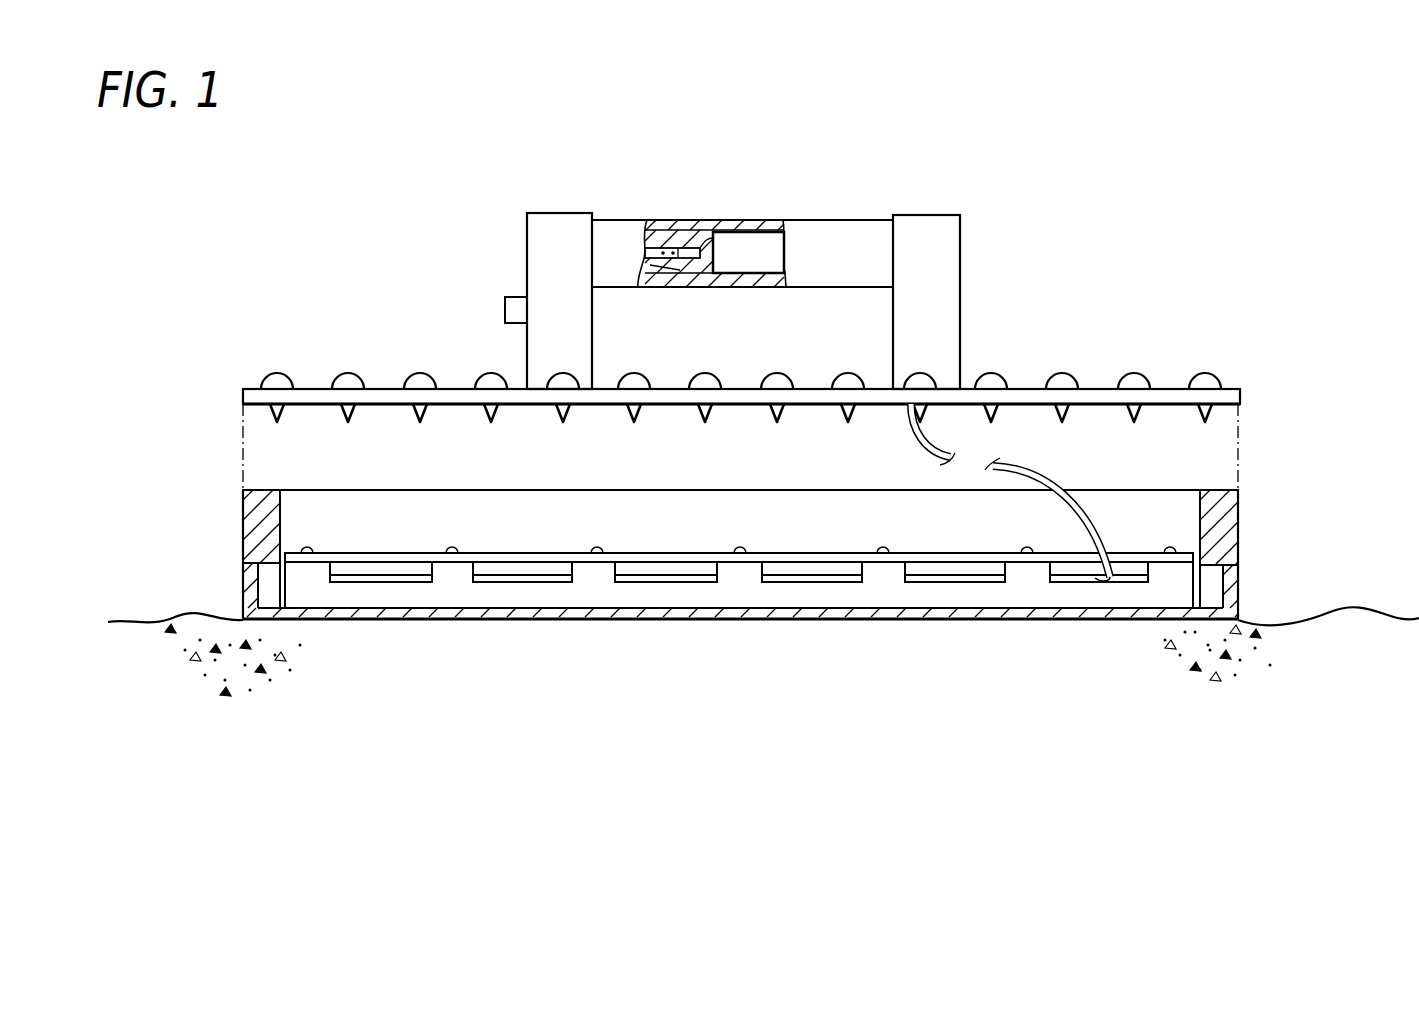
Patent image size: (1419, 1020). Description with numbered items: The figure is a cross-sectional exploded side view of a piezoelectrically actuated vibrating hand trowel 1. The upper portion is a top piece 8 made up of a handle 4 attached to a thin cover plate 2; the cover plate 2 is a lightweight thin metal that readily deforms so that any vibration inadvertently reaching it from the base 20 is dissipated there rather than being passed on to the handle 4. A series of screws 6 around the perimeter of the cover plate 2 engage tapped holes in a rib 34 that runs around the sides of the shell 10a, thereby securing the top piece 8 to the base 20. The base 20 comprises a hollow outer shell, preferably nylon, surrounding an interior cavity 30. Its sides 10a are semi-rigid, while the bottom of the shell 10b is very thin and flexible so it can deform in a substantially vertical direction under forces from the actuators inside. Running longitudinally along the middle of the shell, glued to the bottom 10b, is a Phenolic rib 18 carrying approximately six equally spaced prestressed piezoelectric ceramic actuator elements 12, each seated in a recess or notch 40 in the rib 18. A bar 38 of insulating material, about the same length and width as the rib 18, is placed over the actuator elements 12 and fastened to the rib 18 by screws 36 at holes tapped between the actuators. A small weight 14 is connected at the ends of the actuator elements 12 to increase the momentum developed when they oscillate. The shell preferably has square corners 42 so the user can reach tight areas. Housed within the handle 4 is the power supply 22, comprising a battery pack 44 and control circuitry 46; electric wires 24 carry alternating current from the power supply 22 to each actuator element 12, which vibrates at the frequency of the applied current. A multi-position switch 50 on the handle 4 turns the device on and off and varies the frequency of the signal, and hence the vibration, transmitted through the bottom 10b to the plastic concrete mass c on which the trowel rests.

The piezoelectrically actuated vibrating hand trowel 1 is at (318, 238).
The cover plate 2 is at (1242, 395).
The handle 4 is at (872, 230).
The screws 6 is at (1204, 383).
The top piece 8 is at (203, 365).
The sides of the shell 10a is at (250, 547).
The bottom of the shell 10b is at (947, 615).
The piezoelectric ceramic actuator elements 12 is at (577, 568).
The weight 14 is at (497, 583).
The rib 18 is at (1085, 602).
The base 20 is at (198, 578).
The power supply 22 is at (768, 188).
The electric wires 24 is at (1042, 462).
The interior cavity 30 is at (988, 534).
The rib 34 is at (263, 507).
The screws 36 is at (310, 552).
The bar 38 is at (1028, 570).
The recess or notch 40 is at (830, 603).
The square corners 42 is at (233, 620).
The battery pack 44 is at (797, 222).
The control circuitry 46 is at (685, 232).
The multi-position switch 50 is at (503, 313).
The plastic concrete mass c is at (1205, 648).